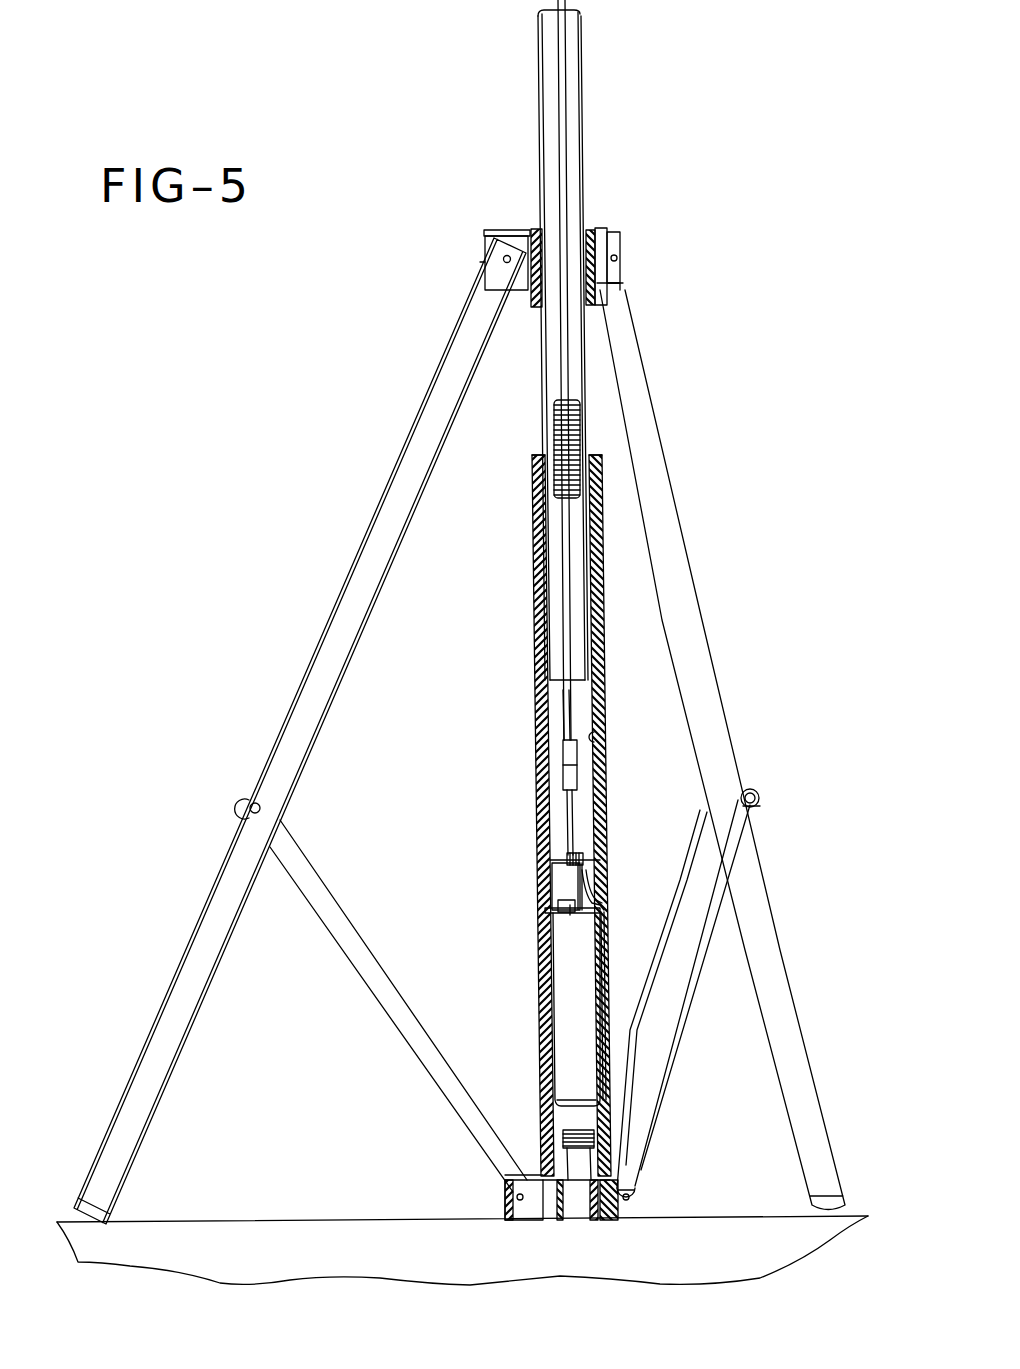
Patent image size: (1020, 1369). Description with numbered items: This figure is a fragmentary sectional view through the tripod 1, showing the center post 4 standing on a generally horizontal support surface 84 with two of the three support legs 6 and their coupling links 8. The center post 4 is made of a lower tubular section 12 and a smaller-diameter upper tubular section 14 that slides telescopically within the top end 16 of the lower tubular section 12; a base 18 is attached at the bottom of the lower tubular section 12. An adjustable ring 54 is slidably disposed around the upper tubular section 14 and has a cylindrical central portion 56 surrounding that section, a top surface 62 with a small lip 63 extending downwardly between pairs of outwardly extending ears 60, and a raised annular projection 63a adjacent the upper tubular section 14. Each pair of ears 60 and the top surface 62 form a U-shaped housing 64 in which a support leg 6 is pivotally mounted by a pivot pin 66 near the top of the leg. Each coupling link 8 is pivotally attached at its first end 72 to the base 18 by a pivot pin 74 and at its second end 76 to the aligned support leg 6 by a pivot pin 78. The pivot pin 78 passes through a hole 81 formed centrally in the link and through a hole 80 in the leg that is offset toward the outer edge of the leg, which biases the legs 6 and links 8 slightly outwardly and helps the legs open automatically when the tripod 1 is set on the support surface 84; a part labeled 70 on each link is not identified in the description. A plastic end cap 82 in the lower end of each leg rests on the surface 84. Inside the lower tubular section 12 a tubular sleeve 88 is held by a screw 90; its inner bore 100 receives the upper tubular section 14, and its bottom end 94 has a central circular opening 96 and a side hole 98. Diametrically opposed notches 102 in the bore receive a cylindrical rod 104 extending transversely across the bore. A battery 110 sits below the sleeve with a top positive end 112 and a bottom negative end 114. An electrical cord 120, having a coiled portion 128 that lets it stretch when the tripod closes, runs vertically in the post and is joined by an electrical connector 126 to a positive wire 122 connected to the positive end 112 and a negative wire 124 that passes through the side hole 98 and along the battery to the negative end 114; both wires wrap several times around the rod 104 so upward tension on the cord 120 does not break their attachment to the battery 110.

The tripod 1 is at (722, 77).
The center post 4 is at (592, 122).
The support legs 6 is at (290, 684).
The coupling links 8 is at (718, 942).
The lower tubular section 12 is at (540, 600).
The upper tubular section 14 is at (540, 125).
The top end 16 is at (535, 455).
The base 18 is at (625, 1215).
The adjustable ring 54 is at (630, 226).
The cylindrical central portion 56 is at (616, 300).
The ears 60 is at (482, 262).
The top surface 62 is at (492, 232).
The small lip 63 is at (478, 250).
The raised annular projection 63a is at (622, 228).
The U-shaped housing 64 is at (522, 240).
The pivot pin 66 is at (504, 262).
The brace rod 70 is at (372, 980).
The first end 72 is at (508, 1172).
The pivot pin 74 is at (515, 1196).
The second end 76 is at (755, 790).
The pivot pin 78 is at (252, 806).
The hole 80 is at (258, 820).
The hole 81 is at (757, 806).
The plastic end cap 82 is at (86, 1216).
The support surface 84 is at (295, 1222).
The tubular sleeve 88 is at (548, 660).
The screw 90 is at (598, 860).
The bottom end 94 is at (565, 906).
The central circular opening 96 is at (580, 890).
The side hole 98 is at (600, 902).
The inner bore 100 is at (598, 737).
The notches 102 is at (565, 860).
The cylindrical rod 104 is at (560, 858).
The battery 110 is at (570, 1025).
The top positive end 112 is at (560, 912).
The bottom negative end 114 is at (605, 1102).
The electrical cord 120 is at (567, 718).
The positive wire 122 is at (570, 912).
The negative wire 124 is at (603, 1040).
The electrical connector 126 is at (568, 752).
The coiled portion 128 is at (566, 430).